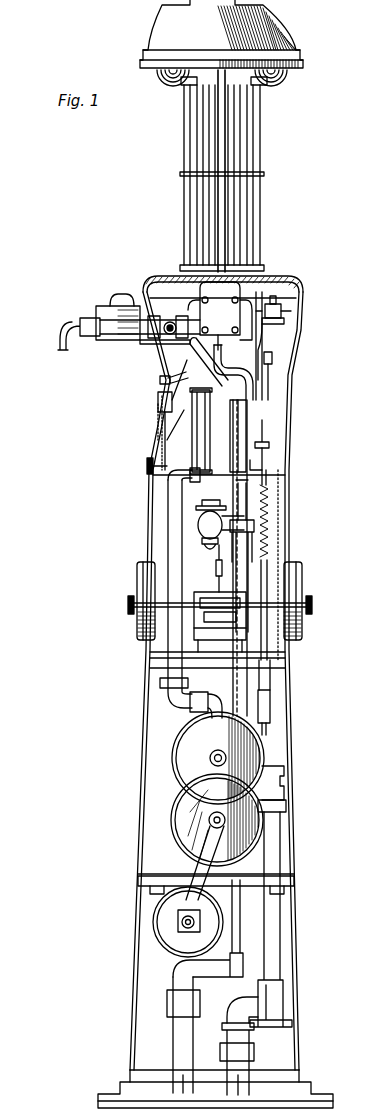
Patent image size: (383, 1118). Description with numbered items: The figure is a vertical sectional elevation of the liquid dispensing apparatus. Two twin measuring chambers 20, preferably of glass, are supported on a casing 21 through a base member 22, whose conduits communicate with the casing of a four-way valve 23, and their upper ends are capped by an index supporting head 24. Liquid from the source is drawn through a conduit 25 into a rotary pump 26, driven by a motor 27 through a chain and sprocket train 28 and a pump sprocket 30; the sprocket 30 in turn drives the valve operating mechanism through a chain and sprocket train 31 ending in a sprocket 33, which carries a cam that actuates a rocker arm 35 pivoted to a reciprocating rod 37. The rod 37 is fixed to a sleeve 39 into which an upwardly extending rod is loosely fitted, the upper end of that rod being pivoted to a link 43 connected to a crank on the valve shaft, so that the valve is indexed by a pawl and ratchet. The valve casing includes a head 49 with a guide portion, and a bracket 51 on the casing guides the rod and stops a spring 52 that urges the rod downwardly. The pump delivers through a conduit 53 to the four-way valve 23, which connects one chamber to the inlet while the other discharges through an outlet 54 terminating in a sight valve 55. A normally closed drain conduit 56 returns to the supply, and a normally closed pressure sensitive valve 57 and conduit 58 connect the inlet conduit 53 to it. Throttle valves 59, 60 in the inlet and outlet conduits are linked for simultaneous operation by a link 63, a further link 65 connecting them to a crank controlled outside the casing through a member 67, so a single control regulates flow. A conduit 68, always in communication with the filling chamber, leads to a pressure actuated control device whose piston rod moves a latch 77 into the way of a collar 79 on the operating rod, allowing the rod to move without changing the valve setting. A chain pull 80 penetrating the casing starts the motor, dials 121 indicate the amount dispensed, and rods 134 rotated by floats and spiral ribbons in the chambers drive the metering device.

The measuring chambers 20 is at (240, 144).
The casing 21 is at (299, 830).
The base member 22 is at (290, 310).
The four-way valve 23 is at (262, 337).
The index supporting head 24 is at (288, 30).
The inlet conduit 25 is at (252, 1062).
The pump 26 is at (276, 777).
The motor 27 is at (180, 940).
The chain and sprocket train 28 is at (175, 876).
The sprocket 30 is at (185, 820).
The chain and sprocket train 31 is at (262, 752).
The sprocket 33 is at (216, 745).
The rocker arm 35 is at (262, 722).
The reciprocating rod 37 is at (270, 698).
The sleeve 39 is at (272, 682).
The link 43 is at (262, 330).
The head 49 is at (272, 358).
The bracket 51 is at (289, 504).
The spring 52 is at (268, 545).
The inlet conduit 53 is at (168, 548).
The outlet conduit 54 is at (150, 320).
The sight valve 55 is at (120, 338).
The drain conduit 56 is at (250, 385).
The pressure sensitive valve 57 is at (198, 522).
The conduit 58 is at (256, 528).
The throttle valve 59 is at (160, 380).
The throttle valve 60 is at (176, 280).
The link 63 is at (212, 335).
The link 65 is at (158, 400).
The control member 67 is at (128, 606).
The conduit 68 is at (246, 398).
The latch 77 is at (265, 464).
The collar 79 is at (269, 452).
The chain pull 80 is at (156, 416).
The dials 121 is at (137, 580).
The rods 134 is at (216, 562).